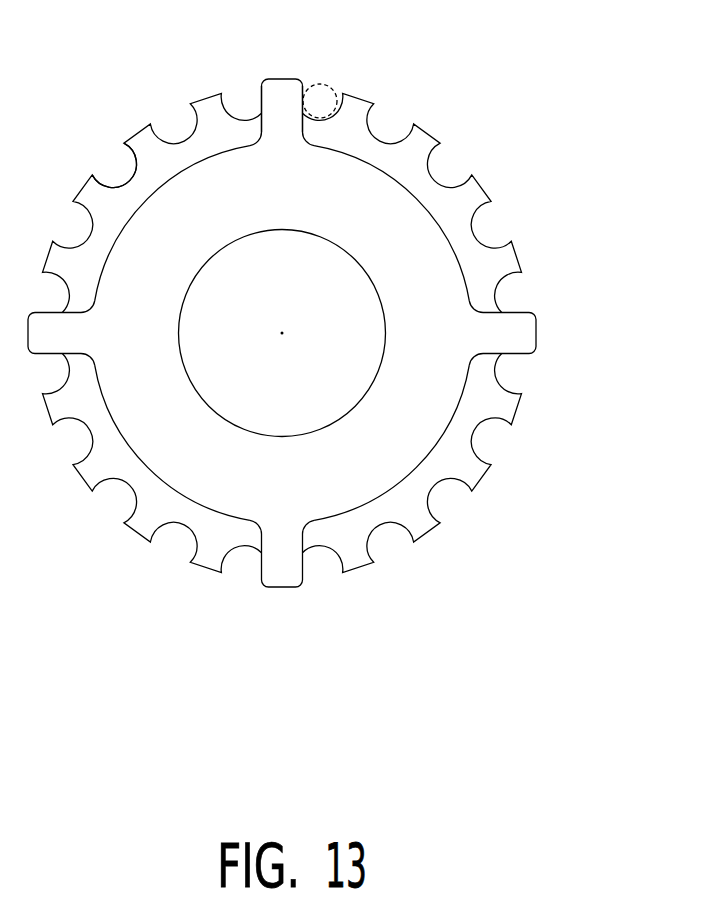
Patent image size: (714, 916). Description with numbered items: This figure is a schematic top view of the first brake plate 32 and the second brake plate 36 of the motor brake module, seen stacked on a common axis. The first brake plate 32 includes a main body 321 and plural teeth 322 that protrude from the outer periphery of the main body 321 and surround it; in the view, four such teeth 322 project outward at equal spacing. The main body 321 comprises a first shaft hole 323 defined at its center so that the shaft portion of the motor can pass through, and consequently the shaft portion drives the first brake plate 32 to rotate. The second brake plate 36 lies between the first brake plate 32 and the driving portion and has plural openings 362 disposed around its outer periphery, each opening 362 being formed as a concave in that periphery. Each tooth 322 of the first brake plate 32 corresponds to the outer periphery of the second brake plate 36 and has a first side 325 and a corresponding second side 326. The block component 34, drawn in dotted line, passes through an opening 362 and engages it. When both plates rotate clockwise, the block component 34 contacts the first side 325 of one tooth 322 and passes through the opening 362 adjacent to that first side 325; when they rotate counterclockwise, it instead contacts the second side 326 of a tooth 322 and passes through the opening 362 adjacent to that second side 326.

The first brake plate 32 is at (321, 293).
The main body 321 is at (392, 223).
The teeth 322 is at (507, 335).
The first shaft hole 323 is at (217, 377).
The first side 325 is at (312, 89).
The second side 326 is at (250, 94).
The block component 34 is at (318, 94).
The second brake plate 36 is at (495, 265).
The openings 362 is at (106, 161).